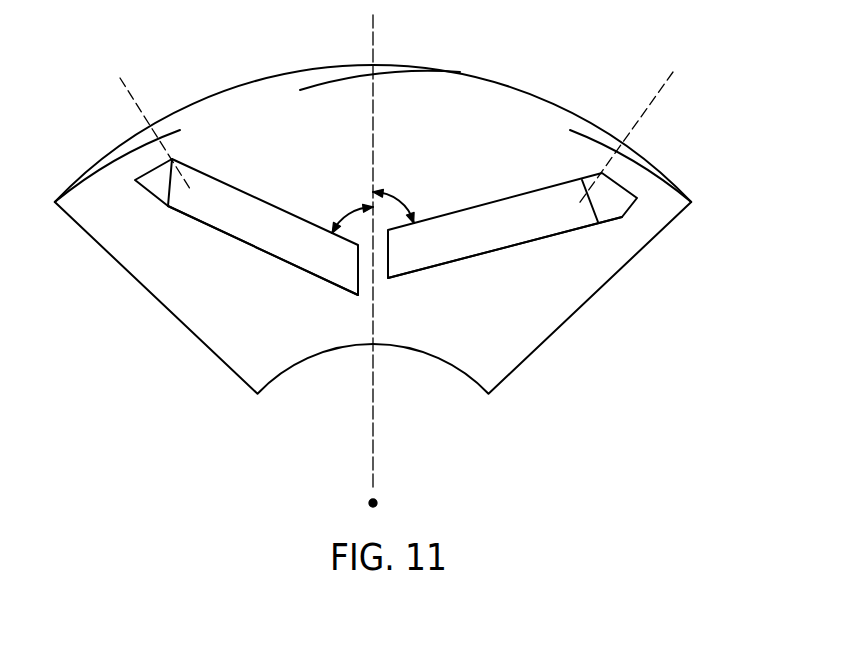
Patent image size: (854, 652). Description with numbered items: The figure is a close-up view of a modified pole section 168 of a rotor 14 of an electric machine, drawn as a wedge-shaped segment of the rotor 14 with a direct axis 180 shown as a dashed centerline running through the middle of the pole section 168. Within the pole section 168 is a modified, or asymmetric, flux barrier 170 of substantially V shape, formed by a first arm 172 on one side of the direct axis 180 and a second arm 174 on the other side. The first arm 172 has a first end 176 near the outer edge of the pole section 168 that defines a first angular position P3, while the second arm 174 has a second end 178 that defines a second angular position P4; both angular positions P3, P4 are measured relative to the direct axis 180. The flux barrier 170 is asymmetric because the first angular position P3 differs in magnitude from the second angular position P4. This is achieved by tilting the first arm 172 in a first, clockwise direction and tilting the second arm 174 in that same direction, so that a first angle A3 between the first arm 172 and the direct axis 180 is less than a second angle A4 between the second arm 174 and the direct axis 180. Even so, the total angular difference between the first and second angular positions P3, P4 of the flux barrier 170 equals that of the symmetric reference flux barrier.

The rotor 14 is at (545, 64).
The pole section 168 is at (482, 92).
The flux barrier 170 is at (259, 230).
The first arm 172 is at (246, 192).
The second arm 174 is at (528, 190).
The first end 176 is at (130, 165).
The second end 178 is at (630, 176).
The direct axis 180 is at (375, 31).
The first angular position P3 is at (146, 119).
The second angular position P4 is at (631, 124).
The first angle A3 is at (347, 204).
The second angle A4 is at (398, 200).